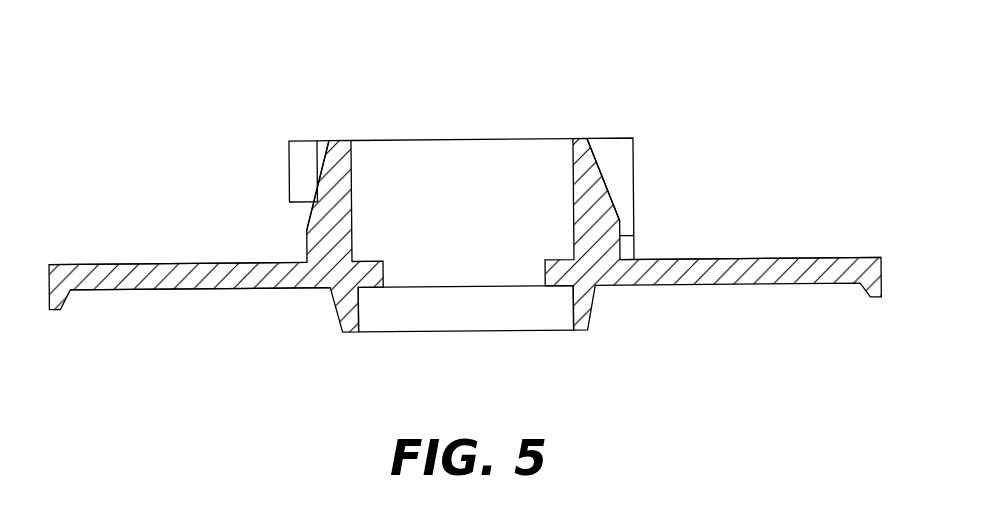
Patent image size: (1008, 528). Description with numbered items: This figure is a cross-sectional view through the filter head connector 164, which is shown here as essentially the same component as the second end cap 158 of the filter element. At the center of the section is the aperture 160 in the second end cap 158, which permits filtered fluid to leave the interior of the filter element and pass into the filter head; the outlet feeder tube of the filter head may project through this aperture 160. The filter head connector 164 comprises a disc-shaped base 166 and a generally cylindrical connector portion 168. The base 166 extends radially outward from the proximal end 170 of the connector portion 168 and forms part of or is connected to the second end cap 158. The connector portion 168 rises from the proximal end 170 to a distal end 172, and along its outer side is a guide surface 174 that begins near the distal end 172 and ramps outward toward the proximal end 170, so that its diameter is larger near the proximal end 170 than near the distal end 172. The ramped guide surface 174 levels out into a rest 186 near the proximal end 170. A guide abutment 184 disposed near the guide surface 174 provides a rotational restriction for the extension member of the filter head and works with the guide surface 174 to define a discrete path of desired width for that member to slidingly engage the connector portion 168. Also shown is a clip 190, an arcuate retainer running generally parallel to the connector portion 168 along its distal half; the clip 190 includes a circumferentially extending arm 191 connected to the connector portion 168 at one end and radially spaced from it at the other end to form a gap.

The second end cap 158 is at (703, 97).
The aperture 160 is at (525, 272).
The filter head connector 164 is at (178, 212).
The base 166 is at (853, 257).
The connector portion 168 is at (382, 139).
The proximal end 170 is at (241, 247).
The distal end 172 is at (238, 169).
The guide surface 174 is at (598, 164).
The guide abutment 184 is at (635, 155).
The rest 186 is at (634, 237).
The clip 190 is at (289, 152).
The circumferentially extending arm 191 is at (304, 139).